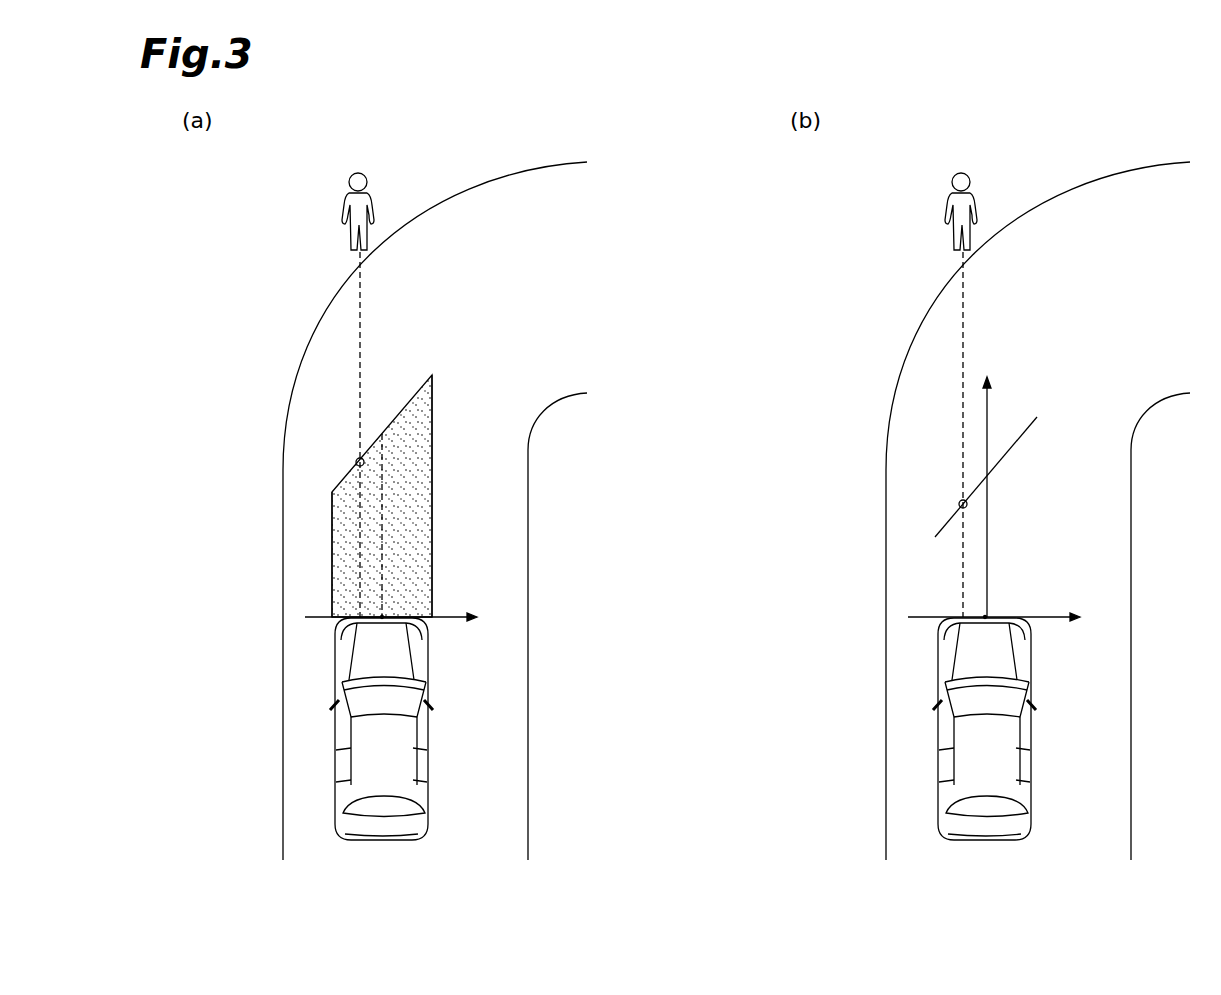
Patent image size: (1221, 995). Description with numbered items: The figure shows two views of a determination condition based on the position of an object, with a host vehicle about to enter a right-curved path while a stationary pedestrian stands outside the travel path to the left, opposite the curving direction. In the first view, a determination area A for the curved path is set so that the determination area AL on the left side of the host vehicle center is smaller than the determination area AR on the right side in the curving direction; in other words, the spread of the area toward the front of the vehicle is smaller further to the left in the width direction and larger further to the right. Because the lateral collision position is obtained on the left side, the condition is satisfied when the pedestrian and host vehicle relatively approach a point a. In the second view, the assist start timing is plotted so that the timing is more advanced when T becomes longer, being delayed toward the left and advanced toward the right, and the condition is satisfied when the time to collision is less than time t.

The determination area A is at (433, 455).
The point a is at (356, 460).
The determination area in the direction opposite to the curving direction AL is at (341, 522).
The determination area in the curving direction AR is at (420, 522).
The assist start timing T is at (999, 494).
The time t is at (978, 477).